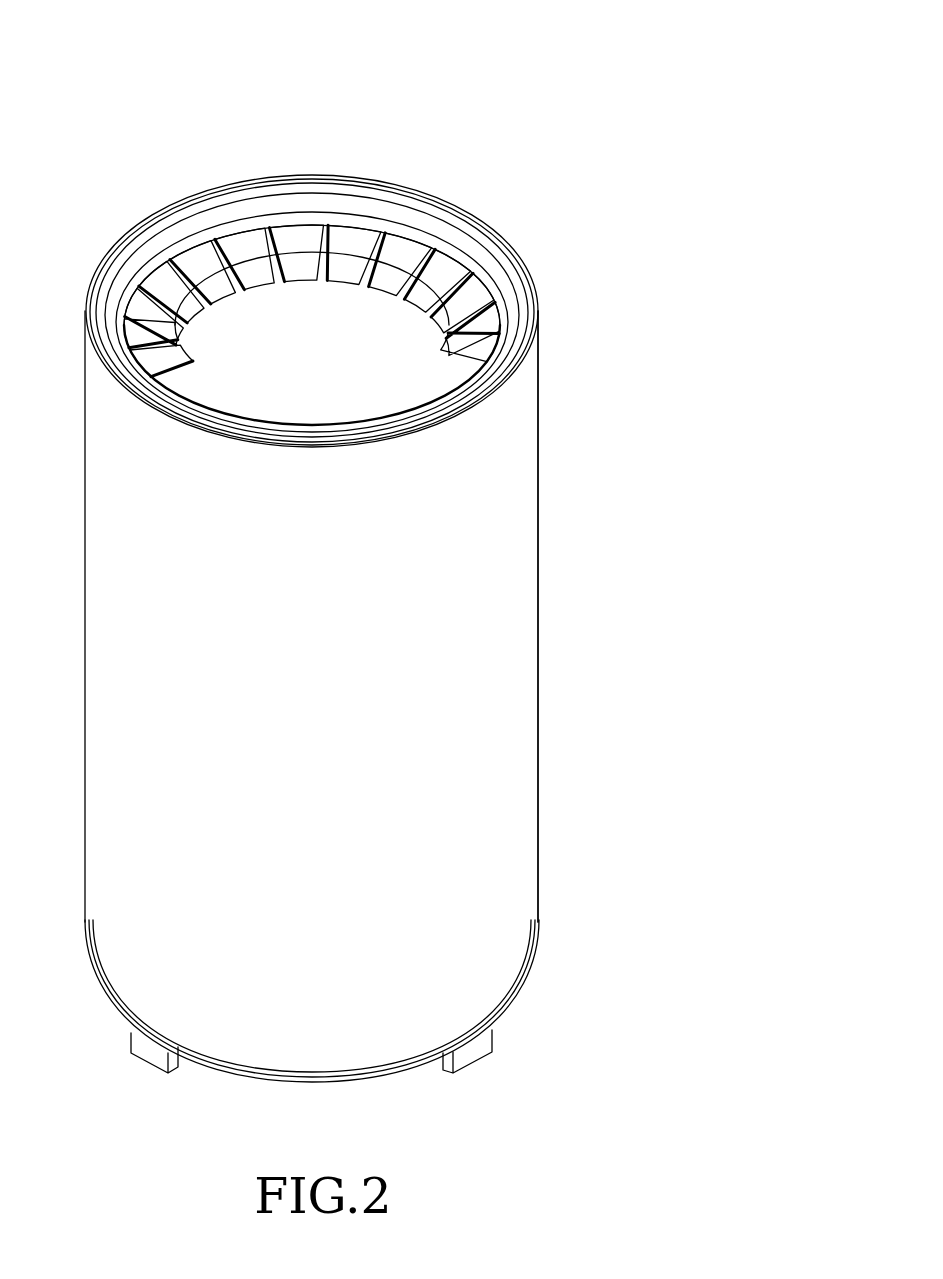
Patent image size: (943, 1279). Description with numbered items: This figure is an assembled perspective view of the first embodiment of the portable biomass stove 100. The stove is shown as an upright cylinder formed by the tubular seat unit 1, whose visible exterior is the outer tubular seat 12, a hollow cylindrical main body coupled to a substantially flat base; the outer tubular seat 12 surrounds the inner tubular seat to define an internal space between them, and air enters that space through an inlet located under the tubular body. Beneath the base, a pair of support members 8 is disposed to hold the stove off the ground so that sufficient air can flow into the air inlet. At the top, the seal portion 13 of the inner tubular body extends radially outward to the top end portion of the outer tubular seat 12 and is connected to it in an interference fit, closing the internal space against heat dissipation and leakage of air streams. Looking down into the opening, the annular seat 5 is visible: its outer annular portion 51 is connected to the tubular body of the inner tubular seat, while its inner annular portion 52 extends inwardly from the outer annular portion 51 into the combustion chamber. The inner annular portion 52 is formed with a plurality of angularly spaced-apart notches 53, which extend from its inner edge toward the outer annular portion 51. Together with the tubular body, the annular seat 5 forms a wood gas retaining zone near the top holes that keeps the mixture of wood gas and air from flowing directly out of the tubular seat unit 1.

The portable biomass stove 100 is at (560, 138).
The tubular seat unit 1 is at (556, 596).
The outer tubular seat 12 is at (512, 678).
The seal portion 13 is at (114, 257).
The annular seat 5 is at (348, 110).
The outer annular portion 51 is at (402, 233).
The inner annular portion 52 is at (400, 282).
The notches 53 is at (387, 235).
The support members 8 is at (148, 1055).